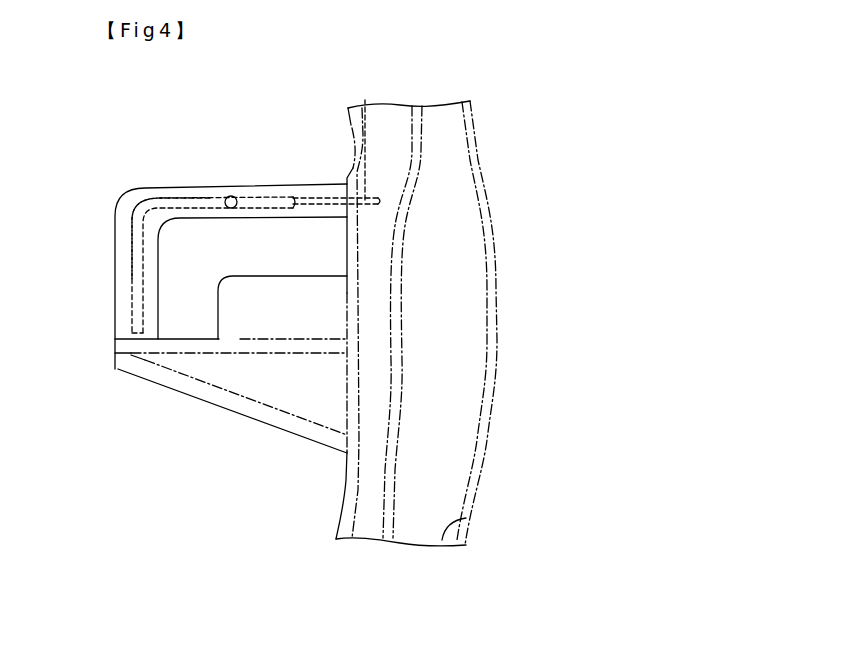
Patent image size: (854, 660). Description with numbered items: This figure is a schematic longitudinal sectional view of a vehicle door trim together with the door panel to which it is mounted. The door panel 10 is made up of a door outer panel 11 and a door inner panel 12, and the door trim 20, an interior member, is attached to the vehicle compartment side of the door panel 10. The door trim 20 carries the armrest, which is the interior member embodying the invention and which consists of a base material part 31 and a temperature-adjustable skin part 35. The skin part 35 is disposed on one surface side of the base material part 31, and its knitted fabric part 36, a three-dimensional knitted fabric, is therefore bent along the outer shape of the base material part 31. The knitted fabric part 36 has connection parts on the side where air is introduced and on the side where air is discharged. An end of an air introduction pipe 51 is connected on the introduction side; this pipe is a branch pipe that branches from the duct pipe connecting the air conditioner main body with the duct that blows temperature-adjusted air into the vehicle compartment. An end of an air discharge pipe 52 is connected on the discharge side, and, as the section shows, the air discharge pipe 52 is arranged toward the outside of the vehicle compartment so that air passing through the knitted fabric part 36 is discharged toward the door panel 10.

The door panel 10 is at (463, 605).
The door outer panel 11 is at (440, 548).
The door inner panel 12 is at (385, 543).
The door trim 20 is at (310, 486).
The base material part 31 is at (315, 247).
The temperature-adjustable skin part 35 is at (267, 192).
The knitted fabric part 36 is at (192, 188).
The air introduction pipe 51 is at (234, 208).
The air discharge pipe 52 is at (365, 100).